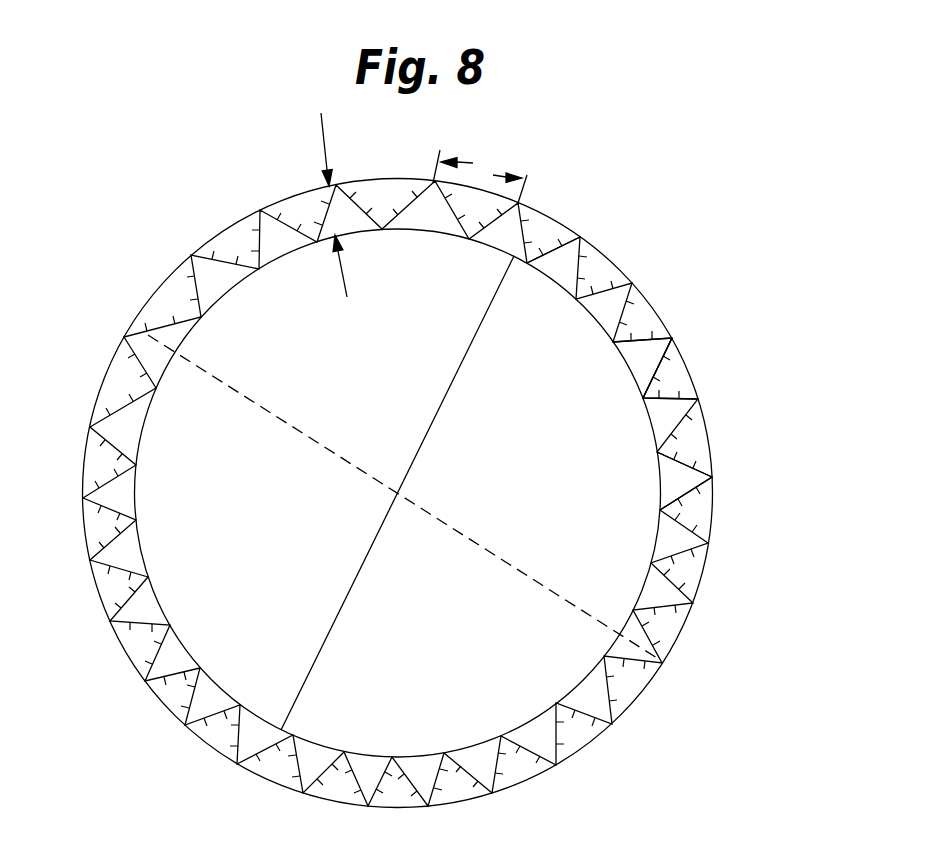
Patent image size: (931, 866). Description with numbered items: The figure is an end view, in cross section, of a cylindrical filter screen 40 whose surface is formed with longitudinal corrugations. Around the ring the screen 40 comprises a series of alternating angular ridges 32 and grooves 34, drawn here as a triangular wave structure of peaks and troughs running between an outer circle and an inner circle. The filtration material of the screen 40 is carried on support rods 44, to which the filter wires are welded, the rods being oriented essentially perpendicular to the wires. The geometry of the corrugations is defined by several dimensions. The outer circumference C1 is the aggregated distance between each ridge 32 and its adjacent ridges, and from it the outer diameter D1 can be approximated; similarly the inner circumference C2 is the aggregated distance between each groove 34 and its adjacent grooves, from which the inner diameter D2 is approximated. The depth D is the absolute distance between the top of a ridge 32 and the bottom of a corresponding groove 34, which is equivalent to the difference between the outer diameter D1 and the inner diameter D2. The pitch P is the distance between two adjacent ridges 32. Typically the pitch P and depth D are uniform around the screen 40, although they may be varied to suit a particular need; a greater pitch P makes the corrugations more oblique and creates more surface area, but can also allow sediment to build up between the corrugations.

The screen 40 is at (150, 156).
The ridges 32 is at (668, 342).
The grooves 34 is at (645, 398).
The support rods 44 is at (690, 465).
The outer circumference C1 is at (632, 282).
The inner circumference C2 is at (558, 287).
The depth D is at (344, 205).
The outer diameter D1 is at (402, 496).
The inner diameter D2 is at (397, 493).
The pitch P is at (480, 176).